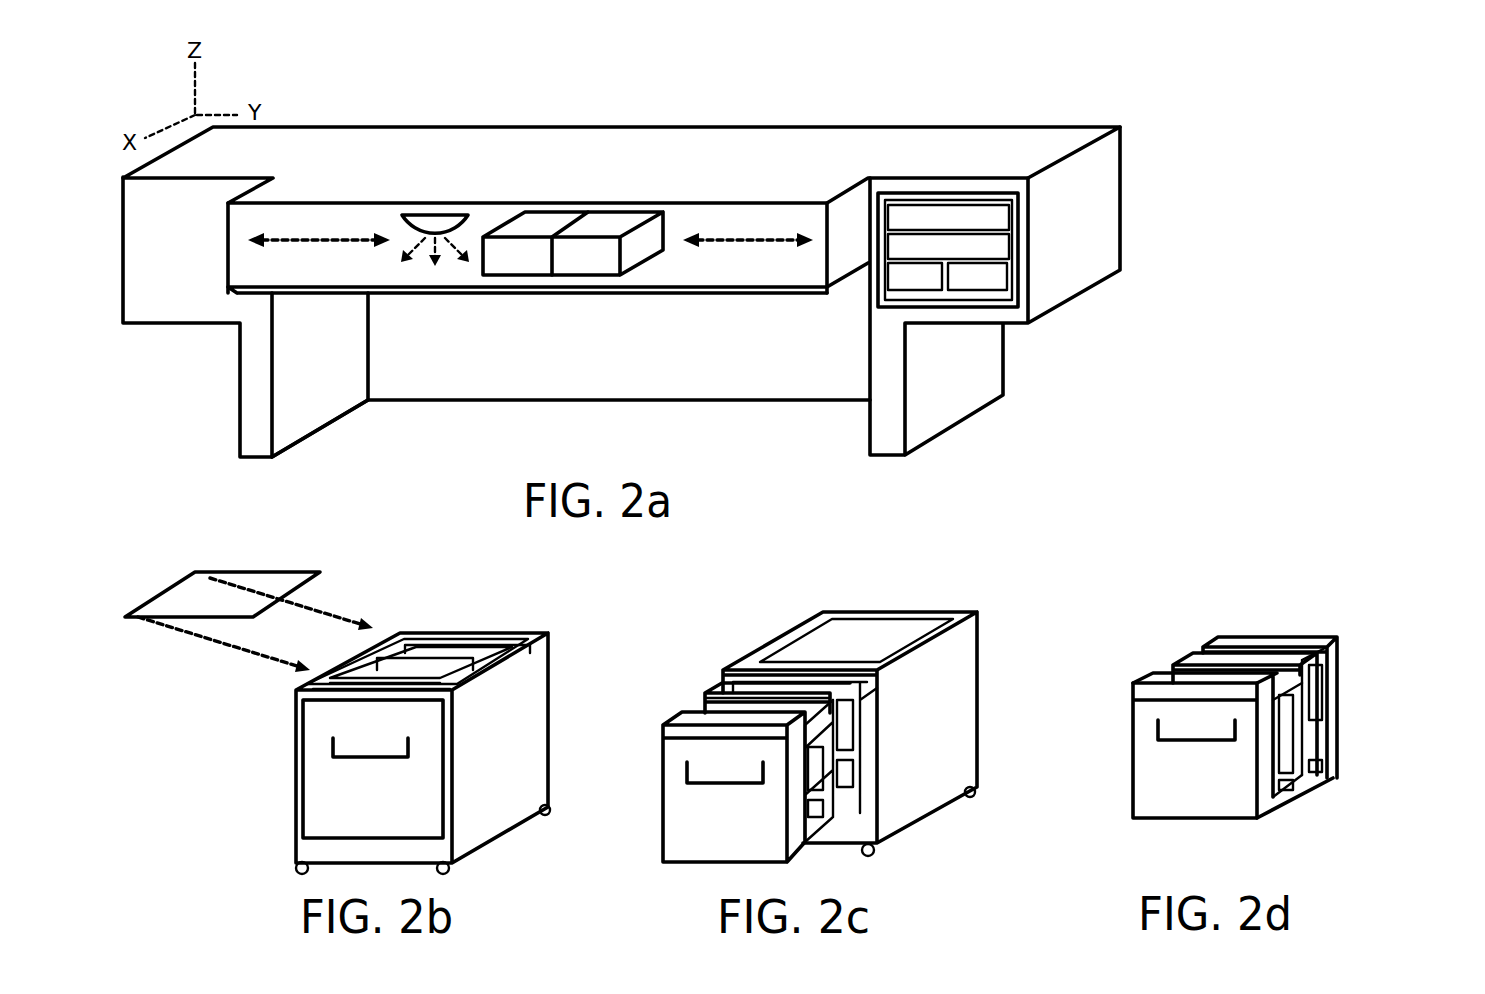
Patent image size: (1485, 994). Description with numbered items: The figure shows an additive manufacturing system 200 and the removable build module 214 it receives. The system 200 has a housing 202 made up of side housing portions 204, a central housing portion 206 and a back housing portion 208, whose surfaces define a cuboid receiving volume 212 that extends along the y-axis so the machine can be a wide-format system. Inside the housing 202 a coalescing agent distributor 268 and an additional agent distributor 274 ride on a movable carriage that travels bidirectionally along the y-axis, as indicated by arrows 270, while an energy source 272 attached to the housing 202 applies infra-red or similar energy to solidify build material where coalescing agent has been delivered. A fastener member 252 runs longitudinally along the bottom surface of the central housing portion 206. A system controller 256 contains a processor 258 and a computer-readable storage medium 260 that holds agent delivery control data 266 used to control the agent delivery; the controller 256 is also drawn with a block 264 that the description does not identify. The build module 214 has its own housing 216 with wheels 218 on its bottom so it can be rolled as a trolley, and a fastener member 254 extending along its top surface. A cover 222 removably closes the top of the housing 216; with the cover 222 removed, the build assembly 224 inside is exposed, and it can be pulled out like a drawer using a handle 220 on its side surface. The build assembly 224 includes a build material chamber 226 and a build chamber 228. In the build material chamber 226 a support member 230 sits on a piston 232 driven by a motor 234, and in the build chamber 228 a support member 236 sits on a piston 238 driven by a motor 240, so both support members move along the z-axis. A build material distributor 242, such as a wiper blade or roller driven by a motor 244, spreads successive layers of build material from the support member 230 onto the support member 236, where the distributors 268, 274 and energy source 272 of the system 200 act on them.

In FIG. 2a, the additive manufacturing system 200 is at (909, 95).
In FIG. 2a, the housing 202 is at (680, 127).
In FIG. 2a, the side housing portions 204 is at (273, 143).
In FIG. 2a, the central housing portion 206 is at (478, 142).
In FIG. 2a, the back housing portion 208 is at (710, 402).
In FIG. 2a, the receiving volume 212 is at (562, 412).
In FIG. 2b, the removable build module 214 is at (460, 592).
In FIG. 2c, the removable build module 214 is at (932, 572).
In FIG. 2b, the housing 216 is at (296, 800).
In FIG. 2b, the wheels 218 is at (298, 867).
In FIG. 2b, the handle 220 is at (350, 760).
In FIG. 2d, the handle 220 is at (1187, 742).
In FIG. 2b, the cover 222 is at (265, 572).
In FIG. 2c, the cover 222 is at (790, 635).
In FIG. 2b, the build assembly 224 is at (450, 633).
In FIG. 2c, the build assembly 224 is at (663, 790).
In FIG. 2d, the build assembly 224 is at (1332, 608).
In FIG. 2b, the build material chamber 226 is at (473, 662).
In FIG. 2d, the build material chamber 226 is at (1167, 668).
In FIG. 2b, the build chamber 228 is at (468, 648).
In FIG. 2d, the build chamber 228 is at (1192, 647).
In FIG. 2d, the support member 230 is at (1280, 708).
In FIG. 2d, the piston 232 is at (1273, 737).
In FIG. 2d, the motor 234 is at (1287, 792).
In FIG. 2d, the support member 236 is at (1340, 652).
In FIG. 2d, the piston 238 is at (1330, 703).
In FIG. 2d, the motor 240 is at (1318, 787).
In FIG. 2b, the build material distributor 242 is at (353, 670).
In FIG. 2d, the build material distributor 242 is at (1155, 683).
In FIG. 2d, the motor 244 is at (1137, 687).
In FIG. 2a, the fastener member 252 is at (462, 287).
In FIG. 2b, the fastener member 254 is at (320, 698).
In FIG. 2a, the system controller 256 is at (937, 195).
In FIG. 2a, the processor 258 is at (966, 228).
In FIG. 2a, the computer-readable storage medium 260 is at (966, 256).
In FIG. 2a, the display button 264 is at (933, 286).
In FIG. 2a, the agent delivery control data 266 is at (995, 286).
In FIG. 2a, the coalescing agent distributor 268 is at (533, 203).
In FIG. 2a, the arrows 270 is at (287, 240).
In FIG. 2a, the energy source 272 is at (435, 215).
In FIG. 2a, the agent distributor 274 is at (607, 207).